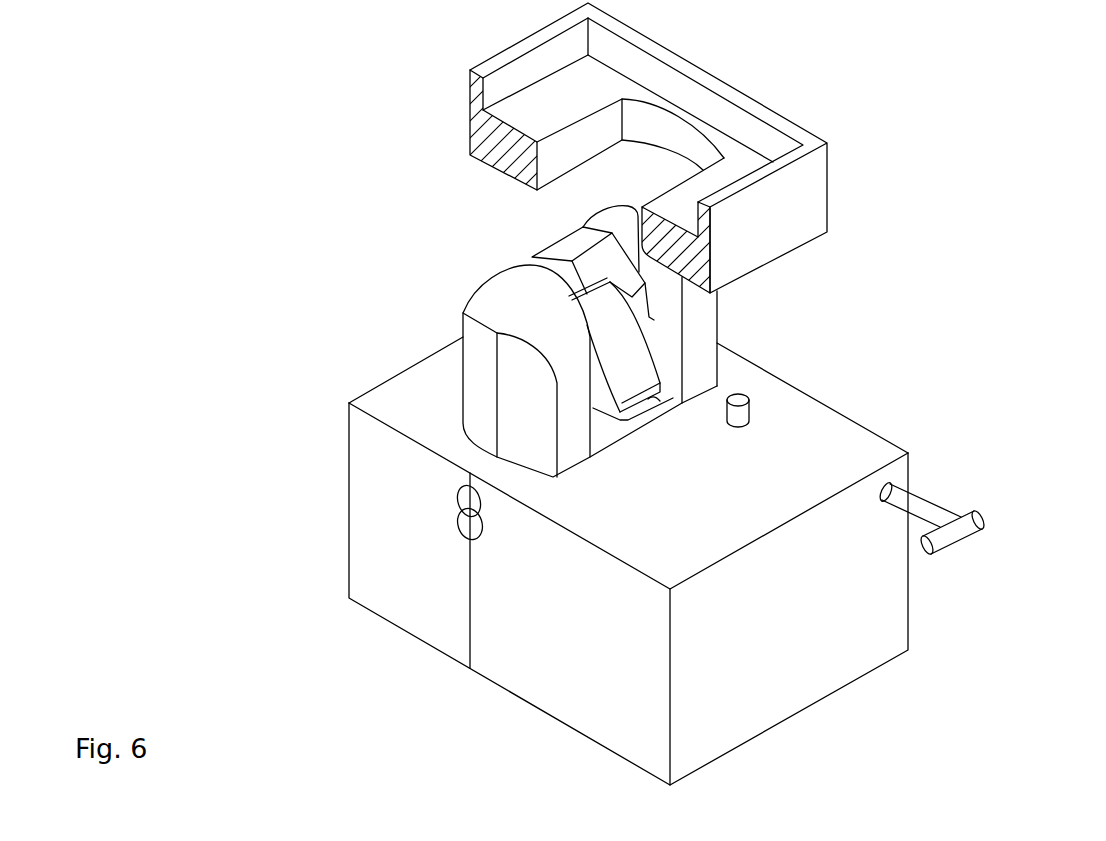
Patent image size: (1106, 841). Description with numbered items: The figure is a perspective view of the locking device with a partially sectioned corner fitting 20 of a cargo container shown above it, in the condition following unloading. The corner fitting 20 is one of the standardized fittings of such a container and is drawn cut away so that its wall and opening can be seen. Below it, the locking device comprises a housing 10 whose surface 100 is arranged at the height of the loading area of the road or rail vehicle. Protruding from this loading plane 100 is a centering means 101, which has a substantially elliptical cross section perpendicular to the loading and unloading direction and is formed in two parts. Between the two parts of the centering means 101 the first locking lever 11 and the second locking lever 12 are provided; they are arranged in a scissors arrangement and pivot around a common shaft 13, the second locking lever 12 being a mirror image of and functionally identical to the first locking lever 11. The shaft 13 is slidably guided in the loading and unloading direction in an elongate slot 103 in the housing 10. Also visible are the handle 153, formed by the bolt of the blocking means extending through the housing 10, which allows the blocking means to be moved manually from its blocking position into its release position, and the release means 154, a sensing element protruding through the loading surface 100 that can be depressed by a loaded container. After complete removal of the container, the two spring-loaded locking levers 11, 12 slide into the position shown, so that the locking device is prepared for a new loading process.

The housing 10 is at (380, 462).
The first locking lever 11 is at (565, 243).
The second locking lever 12 is at (633, 348).
The shaft 13 is at (465, 527).
The corner fitting 20 is at (850, 142).
The surface 100 is at (631, 477).
The centering means 101 is at (493, 305).
The elongate slot 103 is at (463, 503).
The handle 153 is at (960, 522).
The release means 154 is at (752, 410).